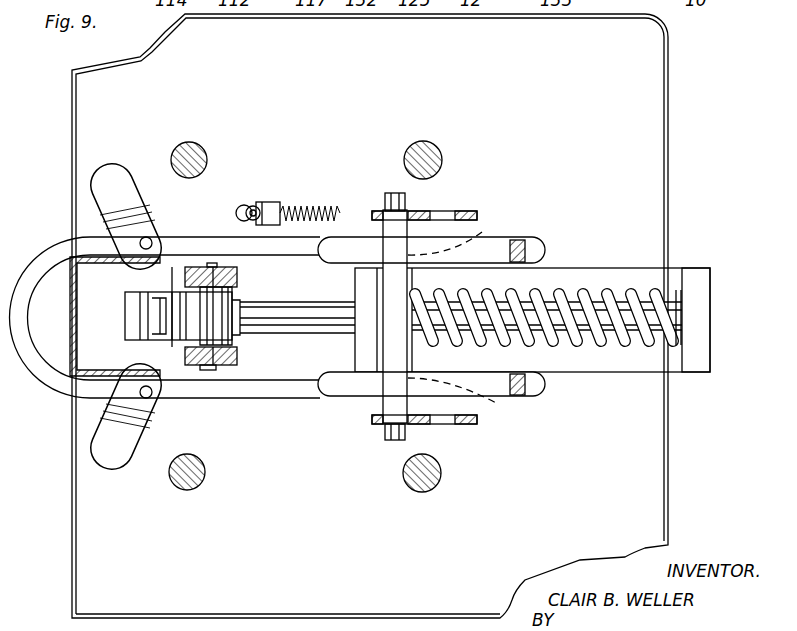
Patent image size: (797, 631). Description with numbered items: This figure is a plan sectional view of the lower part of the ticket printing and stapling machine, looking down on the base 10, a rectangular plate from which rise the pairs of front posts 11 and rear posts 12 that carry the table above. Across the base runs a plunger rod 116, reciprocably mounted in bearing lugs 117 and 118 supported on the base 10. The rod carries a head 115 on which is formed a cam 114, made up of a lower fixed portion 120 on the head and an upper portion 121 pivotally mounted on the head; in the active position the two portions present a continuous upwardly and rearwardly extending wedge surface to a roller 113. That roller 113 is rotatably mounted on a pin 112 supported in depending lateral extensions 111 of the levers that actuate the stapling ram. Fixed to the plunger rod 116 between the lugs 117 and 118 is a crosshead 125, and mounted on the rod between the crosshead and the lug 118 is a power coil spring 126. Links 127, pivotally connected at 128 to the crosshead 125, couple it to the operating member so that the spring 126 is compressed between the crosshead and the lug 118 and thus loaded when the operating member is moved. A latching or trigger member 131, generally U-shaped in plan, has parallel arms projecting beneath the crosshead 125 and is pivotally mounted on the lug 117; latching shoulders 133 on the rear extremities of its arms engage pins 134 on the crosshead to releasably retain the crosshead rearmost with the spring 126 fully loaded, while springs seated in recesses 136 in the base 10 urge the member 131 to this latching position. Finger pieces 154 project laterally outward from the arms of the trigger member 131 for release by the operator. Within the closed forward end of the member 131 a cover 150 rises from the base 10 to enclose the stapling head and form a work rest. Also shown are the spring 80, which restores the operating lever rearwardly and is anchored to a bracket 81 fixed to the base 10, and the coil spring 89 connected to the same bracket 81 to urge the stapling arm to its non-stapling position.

The base 10 is at (668, 88).
The front posts 11 is at (183, 143).
The rear posts 12 is at (425, 141).
The spring 80 is at (327, 208).
The bracket 81 is at (273, 200).
The coil spring 89 is at (240, 203).
The depending lateral extensions 111 is at (216, 266).
The pin 112 is at (209, 371).
The roller 113 is at (212, 306).
The cam 114 is at (172, 293).
The head 115 is at (235, 340).
The plunger rod 116 is at (313, 326).
The bearing lug 117 is at (362, 282).
The bearing lug 118 is at (705, 280).
The lower fixed portion 120 is at (130, 314).
The upper portion 121 is at (166, 300).
The crosshead 125 is at (408, 355).
The power coil spring 126 is at (618, 290).
The links 127 is at (470, 210).
The pivotal connection 128 is at (389, 192).
The latching or trigger member 131 is at (57, 380).
The latching shoulders 133 is at (540, 240).
The pins 134 is at (484, 230).
The recesses 136 is at (549, 247).
The cover 150 is at (68, 278).
The finger pieces 154 is at (103, 163).